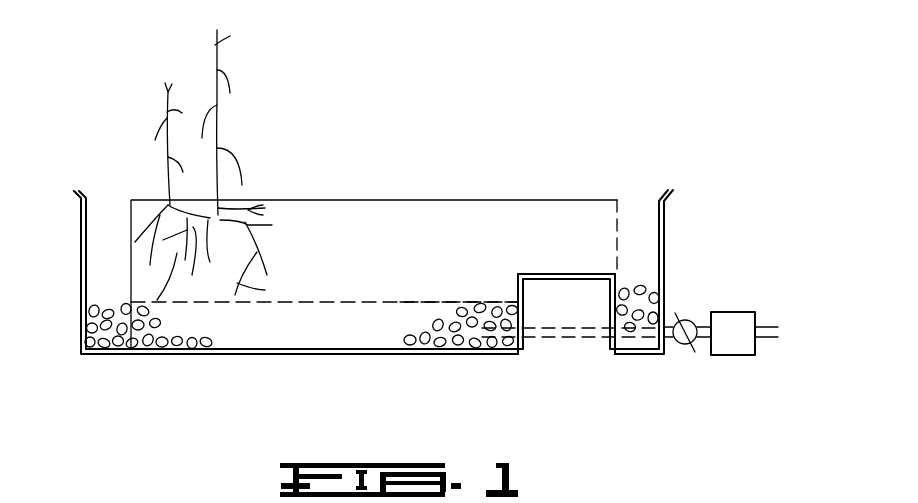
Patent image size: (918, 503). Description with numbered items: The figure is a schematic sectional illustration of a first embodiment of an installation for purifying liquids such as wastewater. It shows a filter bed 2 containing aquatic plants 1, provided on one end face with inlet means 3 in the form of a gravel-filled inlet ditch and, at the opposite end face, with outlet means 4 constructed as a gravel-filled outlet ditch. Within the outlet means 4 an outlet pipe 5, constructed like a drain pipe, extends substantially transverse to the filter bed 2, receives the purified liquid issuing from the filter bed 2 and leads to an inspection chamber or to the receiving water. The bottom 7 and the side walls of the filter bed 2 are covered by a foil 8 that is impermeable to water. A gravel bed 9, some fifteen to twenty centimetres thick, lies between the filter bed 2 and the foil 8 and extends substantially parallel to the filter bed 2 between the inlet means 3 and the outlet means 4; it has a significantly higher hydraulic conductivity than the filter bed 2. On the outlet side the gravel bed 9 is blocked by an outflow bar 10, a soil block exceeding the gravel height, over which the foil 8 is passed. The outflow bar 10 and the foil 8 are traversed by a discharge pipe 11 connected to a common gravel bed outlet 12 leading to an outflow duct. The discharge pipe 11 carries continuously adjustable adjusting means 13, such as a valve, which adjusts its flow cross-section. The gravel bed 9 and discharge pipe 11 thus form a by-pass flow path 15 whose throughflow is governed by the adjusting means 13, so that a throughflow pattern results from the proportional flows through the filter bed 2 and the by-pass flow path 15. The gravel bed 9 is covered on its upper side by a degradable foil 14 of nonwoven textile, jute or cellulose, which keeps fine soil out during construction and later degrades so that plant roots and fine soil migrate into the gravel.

The aquatic plants 1 is at (256, 117).
The filter bed 2 is at (374, 274).
The inlet means 3 is at (102, 278).
The outlet means 4 is at (645, 275).
The outlet pipe 5 is at (632, 315).
The bottom 7 is at (246, 366).
The foil 8 is at (378, 355).
The gravel bed 9 is at (437, 346).
The outflow bar 10 is at (533, 290).
The discharge pipe 11 is at (567, 340).
The gravel bed outlet 12 is at (735, 328).
The adjusting means 13 is at (680, 347).
The degradable foil 14 is at (288, 300).
The by-pass flow path 15 is at (424, 318).